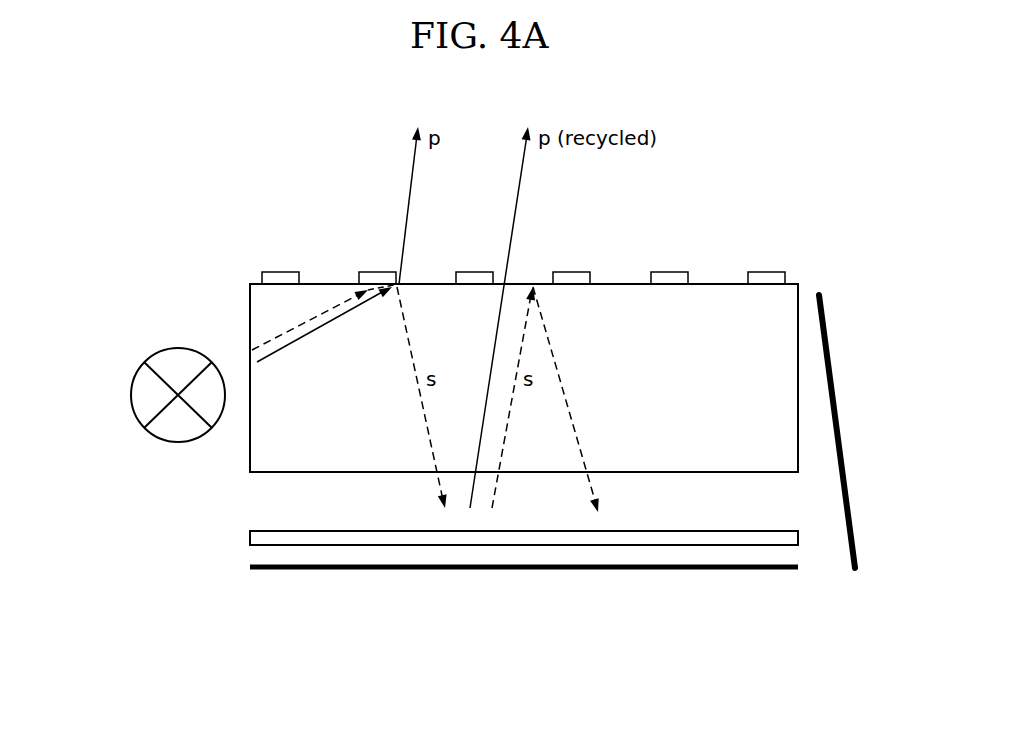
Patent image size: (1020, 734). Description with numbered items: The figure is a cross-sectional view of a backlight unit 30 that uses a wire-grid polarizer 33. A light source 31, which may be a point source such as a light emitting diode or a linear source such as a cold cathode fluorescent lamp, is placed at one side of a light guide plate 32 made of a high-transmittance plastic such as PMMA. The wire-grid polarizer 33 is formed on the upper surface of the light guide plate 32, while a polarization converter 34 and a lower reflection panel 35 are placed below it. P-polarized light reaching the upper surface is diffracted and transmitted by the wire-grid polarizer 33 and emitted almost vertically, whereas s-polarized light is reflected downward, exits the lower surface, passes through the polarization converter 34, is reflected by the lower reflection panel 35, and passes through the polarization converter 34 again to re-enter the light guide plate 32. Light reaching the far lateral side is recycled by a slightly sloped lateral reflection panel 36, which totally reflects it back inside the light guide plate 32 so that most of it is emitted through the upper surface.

The backlight unit 30 is at (509, 632).
The light source 31 is at (128, 393).
The light guide plate 32 is at (717, 304).
The wire-grid polarizer 33 is at (767, 272).
The polarization converter 34 is at (690, 538).
The lower reflection panel 35 is at (693, 570).
The lateral reflection panel 36 is at (840, 433).